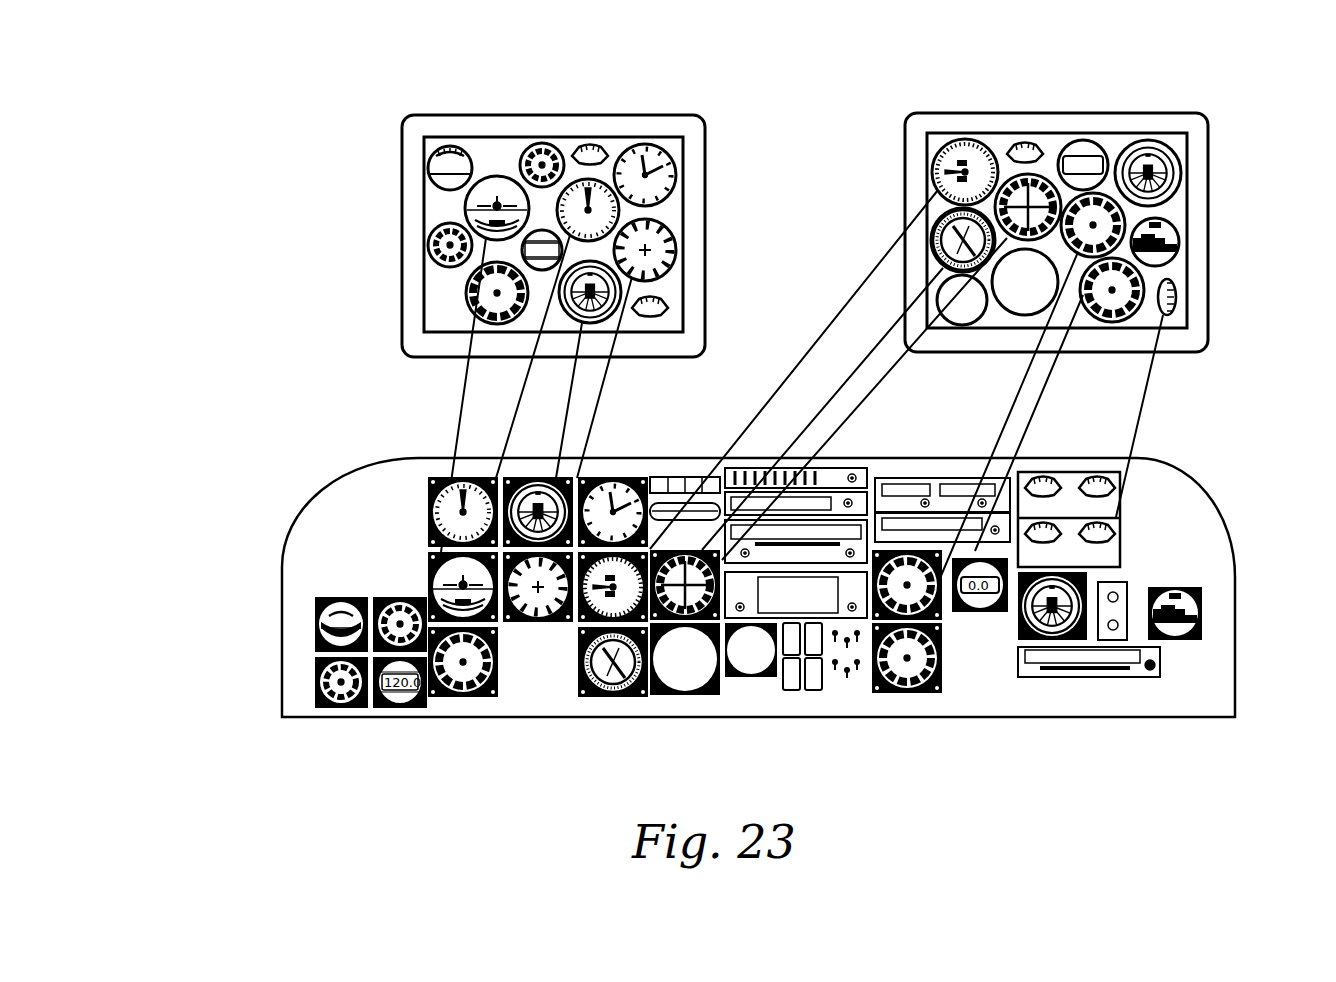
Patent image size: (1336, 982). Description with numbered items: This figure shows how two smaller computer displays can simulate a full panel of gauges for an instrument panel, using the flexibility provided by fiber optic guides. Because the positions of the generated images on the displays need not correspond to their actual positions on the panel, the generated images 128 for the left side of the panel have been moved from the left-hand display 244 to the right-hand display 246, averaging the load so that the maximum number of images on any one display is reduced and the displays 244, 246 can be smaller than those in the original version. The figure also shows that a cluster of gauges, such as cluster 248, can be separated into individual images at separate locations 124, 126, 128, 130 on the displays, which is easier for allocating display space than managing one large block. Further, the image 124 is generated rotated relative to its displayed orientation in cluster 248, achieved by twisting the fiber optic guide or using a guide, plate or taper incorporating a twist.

The generated image 124 is at (1163, 315).
The separate location 126 is at (666, 306).
The generated images 128 is at (965, 124).
The separate location 130 is at (593, 147).
The left-hand display 244 is at (398, 127).
The right-hand display 246 is at (1120, 112).
The cluster of gauges 248 is at (1118, 533).